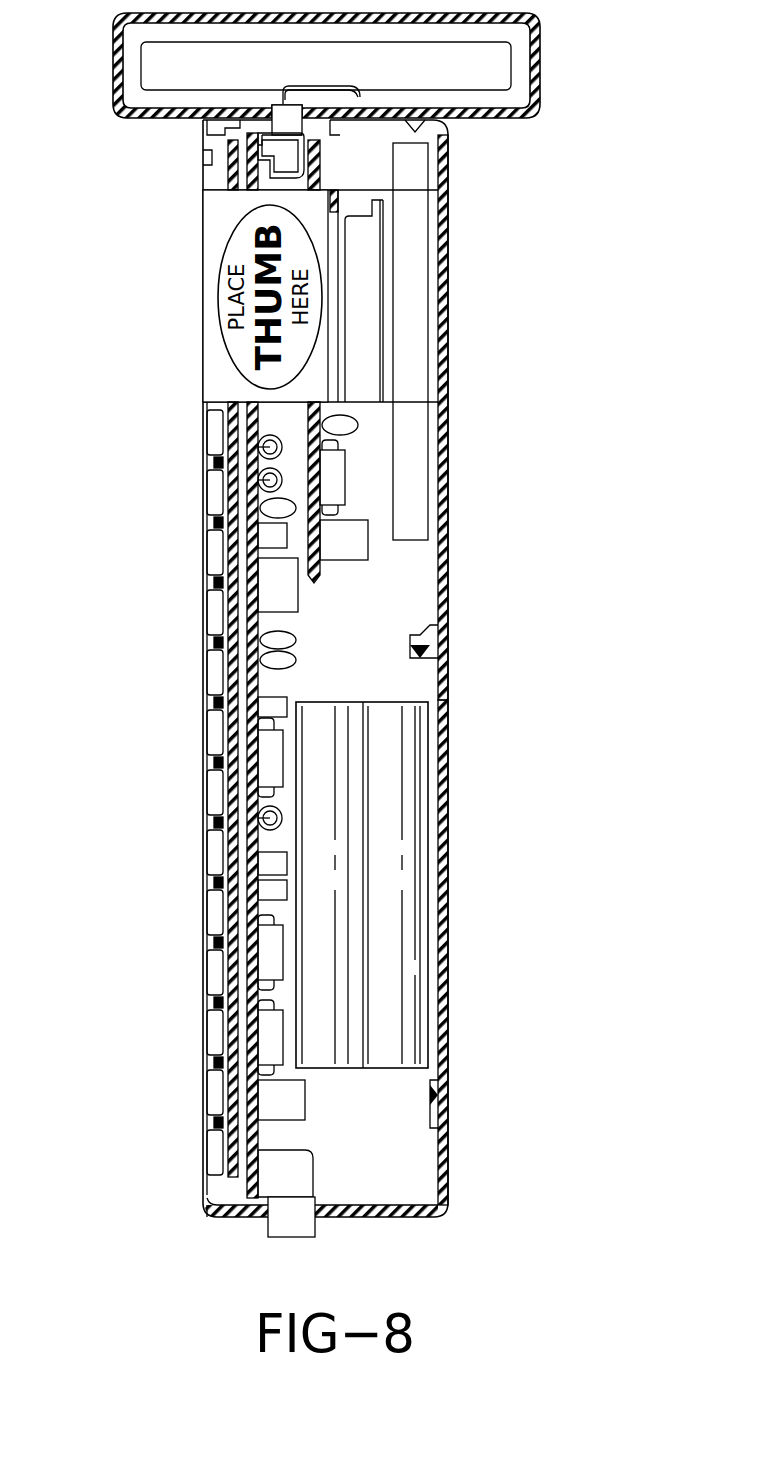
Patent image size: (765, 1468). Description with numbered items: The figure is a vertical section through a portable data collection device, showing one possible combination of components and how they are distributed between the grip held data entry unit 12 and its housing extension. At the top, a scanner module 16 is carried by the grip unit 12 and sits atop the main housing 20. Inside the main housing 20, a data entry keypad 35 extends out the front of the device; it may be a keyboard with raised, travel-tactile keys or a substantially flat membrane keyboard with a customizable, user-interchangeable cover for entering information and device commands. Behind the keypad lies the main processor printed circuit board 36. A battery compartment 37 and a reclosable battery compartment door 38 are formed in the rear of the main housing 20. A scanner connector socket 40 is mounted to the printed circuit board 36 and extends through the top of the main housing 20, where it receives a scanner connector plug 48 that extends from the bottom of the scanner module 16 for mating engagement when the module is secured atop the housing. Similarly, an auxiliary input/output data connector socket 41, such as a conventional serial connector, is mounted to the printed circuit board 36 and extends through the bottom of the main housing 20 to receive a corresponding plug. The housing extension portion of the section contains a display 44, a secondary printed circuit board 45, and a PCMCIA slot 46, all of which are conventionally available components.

The grip held data entry unit 12 is at (447, 242).
The scanner module 16 is at (540, 65).
The main housing 20 is at (445, 485).
The data entry keypad 35 is at (207, 725).
The main processor printed circuit board 36 is at (255, 614).
The battery compartment 37 is at (405, 840).
The battery compartment door 38 is at (445, 908).
The scanner connector socket 40 is at (286, 140).
The auxiliary input/output data connector socket 41 is at (290, 1228).
The display 44 is at (358, 312).
The secondary printed circuit board 45 is at (322, 570).
The PCMCIA slot 46 is at (413, 310).
The scanner connector plug 48 is at (282, 112).